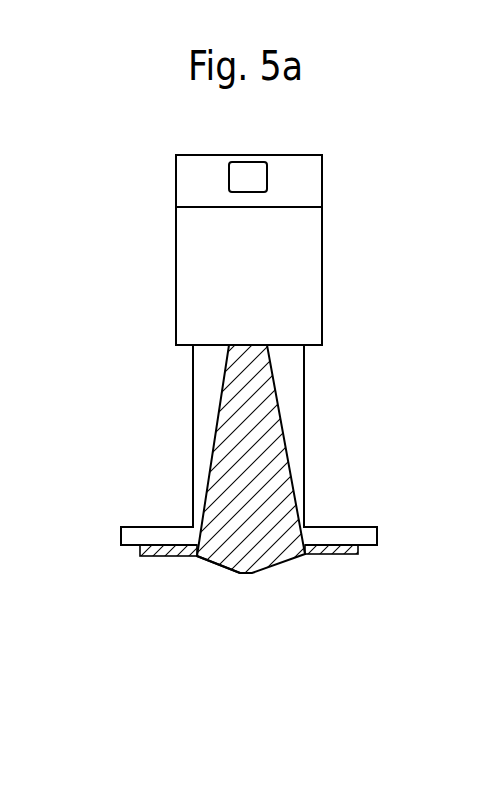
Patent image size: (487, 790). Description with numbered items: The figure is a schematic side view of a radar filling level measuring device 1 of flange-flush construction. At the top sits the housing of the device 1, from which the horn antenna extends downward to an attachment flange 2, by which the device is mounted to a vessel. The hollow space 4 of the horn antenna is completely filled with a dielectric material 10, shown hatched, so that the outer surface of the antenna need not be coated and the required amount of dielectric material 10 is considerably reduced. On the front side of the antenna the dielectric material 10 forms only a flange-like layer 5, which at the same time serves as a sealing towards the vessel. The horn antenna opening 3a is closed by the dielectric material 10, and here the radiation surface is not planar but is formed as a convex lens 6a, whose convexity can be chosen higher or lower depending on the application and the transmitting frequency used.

The filling level measuring device 1 is at (288, 273).
The attachment flange 2 is at (288, 367).
The hollow space 4 is at (227, 440).
The dielectric material 10 is at (228, 488).
The flange-like layer 5 is at (143, 556).
The convex lens 6a is at (243, 572).
The horn antenna opening 3a is at (267, 577).